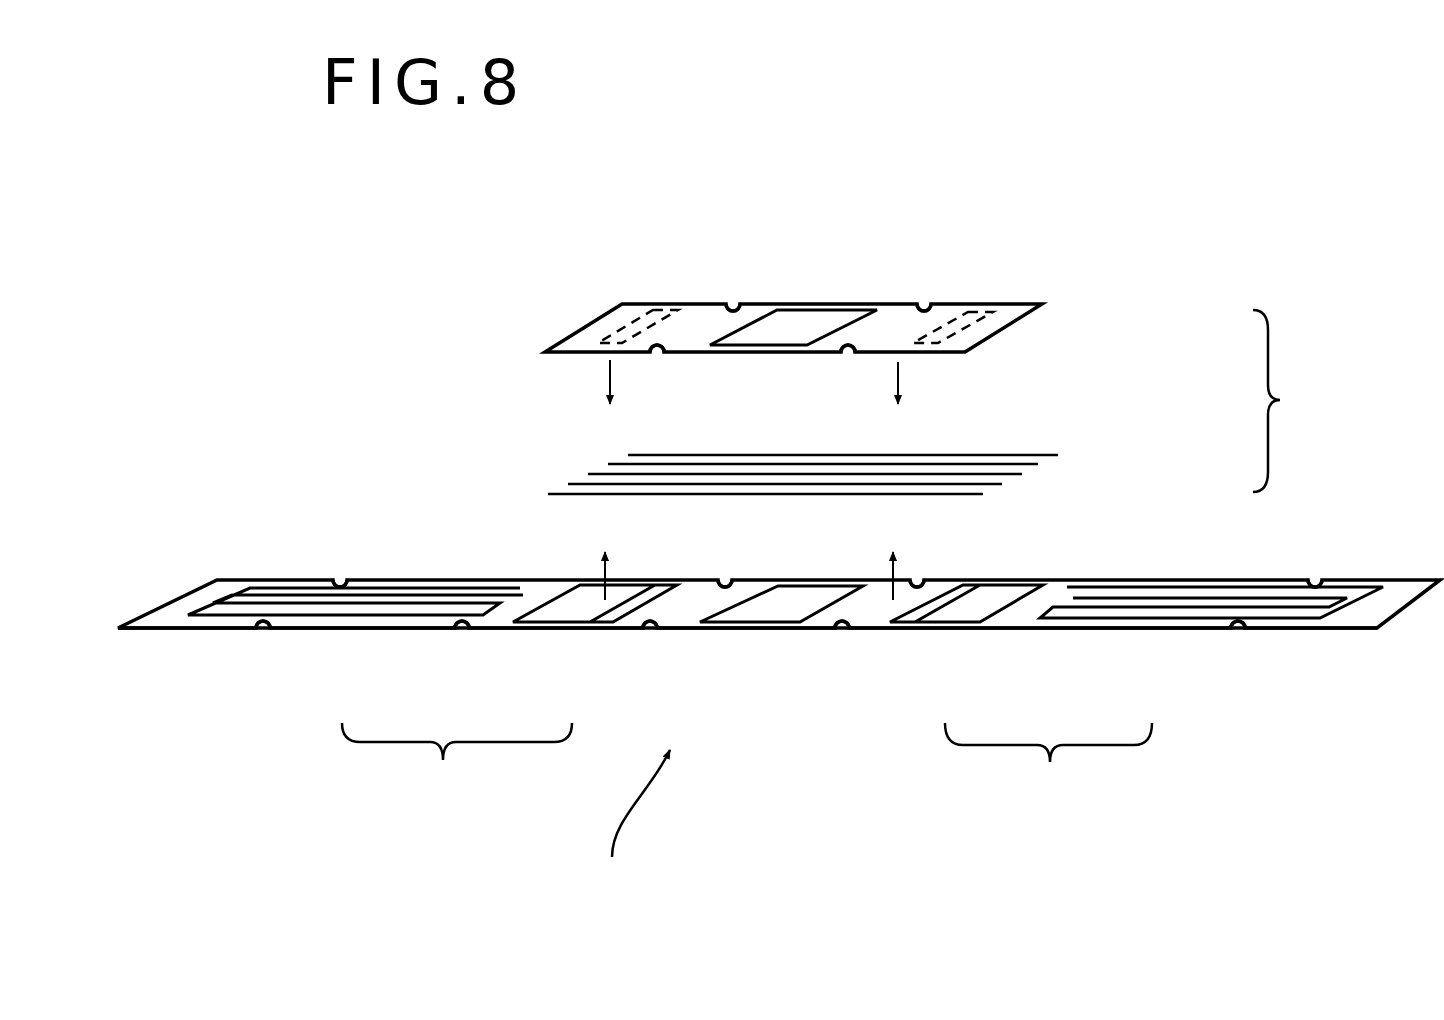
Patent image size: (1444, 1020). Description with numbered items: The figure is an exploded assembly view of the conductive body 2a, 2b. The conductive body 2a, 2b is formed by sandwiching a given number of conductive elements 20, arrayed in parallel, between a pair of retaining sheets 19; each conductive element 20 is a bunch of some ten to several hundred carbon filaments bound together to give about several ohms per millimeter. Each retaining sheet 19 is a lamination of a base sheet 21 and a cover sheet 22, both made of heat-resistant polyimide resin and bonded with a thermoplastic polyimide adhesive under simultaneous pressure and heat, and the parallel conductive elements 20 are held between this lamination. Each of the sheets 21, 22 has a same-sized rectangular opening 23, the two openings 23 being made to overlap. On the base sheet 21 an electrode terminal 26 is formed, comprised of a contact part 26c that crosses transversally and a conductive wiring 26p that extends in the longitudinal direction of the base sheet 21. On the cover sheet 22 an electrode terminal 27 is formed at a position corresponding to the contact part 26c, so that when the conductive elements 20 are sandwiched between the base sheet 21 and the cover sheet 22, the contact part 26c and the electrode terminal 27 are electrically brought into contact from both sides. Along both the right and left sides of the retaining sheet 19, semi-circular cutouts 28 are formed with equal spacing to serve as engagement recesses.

The conductive body 2a is at (622, 825).
The conductive body 2b is at (747, 764).
The retaining sheet 19 is at (1293, 401).
The conductive element 20 is at (970, 494).
The base sheet 21 is at (1210, 578).
The cover sheet 22 is at (1042, 306).
The rectangular opening 23 is at (808, 320).
The electrode terminal 26 is at (747, 766).
The conductive wiring 26p is at (395, 616).
The contact part 26c is at (620, 622).
The electrode terminal 27 is at (657, 303).
The semi-circular cutout 28 is at (733, 302).